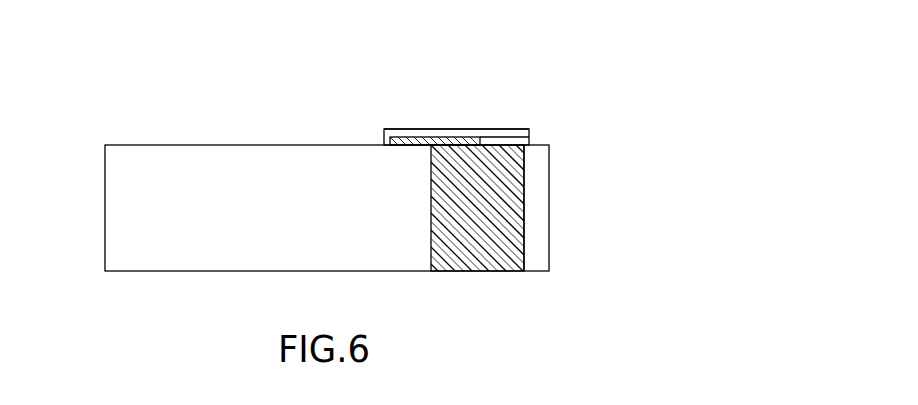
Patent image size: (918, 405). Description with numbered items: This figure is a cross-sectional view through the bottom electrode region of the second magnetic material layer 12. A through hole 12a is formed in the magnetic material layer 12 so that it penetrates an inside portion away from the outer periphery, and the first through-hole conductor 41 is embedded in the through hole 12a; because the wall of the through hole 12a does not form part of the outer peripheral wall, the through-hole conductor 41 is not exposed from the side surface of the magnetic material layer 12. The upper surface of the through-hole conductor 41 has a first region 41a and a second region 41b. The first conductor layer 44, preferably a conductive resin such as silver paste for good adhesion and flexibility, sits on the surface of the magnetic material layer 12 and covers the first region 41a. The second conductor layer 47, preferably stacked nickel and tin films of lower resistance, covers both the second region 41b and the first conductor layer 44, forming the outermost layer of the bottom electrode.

The second magnetic material layer 12 is at (122, 204).
The through hole 12a is at (523, 247).
The first through-hole conductor 41 is at (525, 198).
The first region 41a is at (470, 140).
The second region 41b is at (502, 143).
The first conductor layer 44 is at (415, 137).
The second conductor layer 47 is at (518, 130).